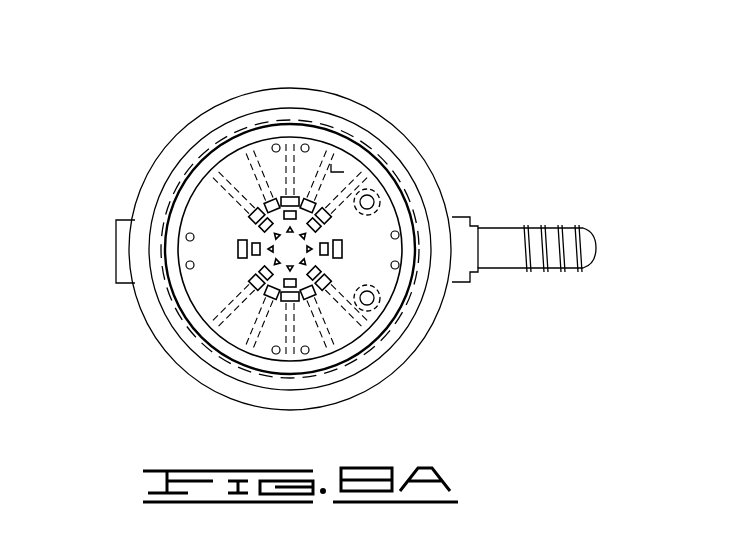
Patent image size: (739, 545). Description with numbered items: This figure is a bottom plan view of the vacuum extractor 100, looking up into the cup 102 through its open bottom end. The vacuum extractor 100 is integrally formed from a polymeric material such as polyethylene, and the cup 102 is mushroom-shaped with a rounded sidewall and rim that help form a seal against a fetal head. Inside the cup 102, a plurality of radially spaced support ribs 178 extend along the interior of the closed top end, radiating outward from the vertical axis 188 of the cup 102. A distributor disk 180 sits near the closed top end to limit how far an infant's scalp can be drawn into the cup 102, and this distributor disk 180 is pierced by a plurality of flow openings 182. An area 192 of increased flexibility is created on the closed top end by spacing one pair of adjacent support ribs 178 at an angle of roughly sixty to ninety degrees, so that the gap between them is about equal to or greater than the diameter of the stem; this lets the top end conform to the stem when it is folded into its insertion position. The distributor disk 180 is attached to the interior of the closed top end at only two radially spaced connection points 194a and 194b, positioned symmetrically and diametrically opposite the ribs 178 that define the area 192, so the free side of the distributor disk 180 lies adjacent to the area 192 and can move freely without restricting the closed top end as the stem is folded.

The vacuum extractor 100 is at (290, 82).
The cup 102 is at (377, 108).
The support ribs 178 is at (352, 165).
The distributor disk 180 is at (352, 175).
The flow openings 182 is at (342, 251).
The vertical axis 188 is at (294, 247).
The area of increased flexibility 192 is at (180, 245).
The connection point 194a is at (372, 204).
The connection point 194b is at (370, 304).